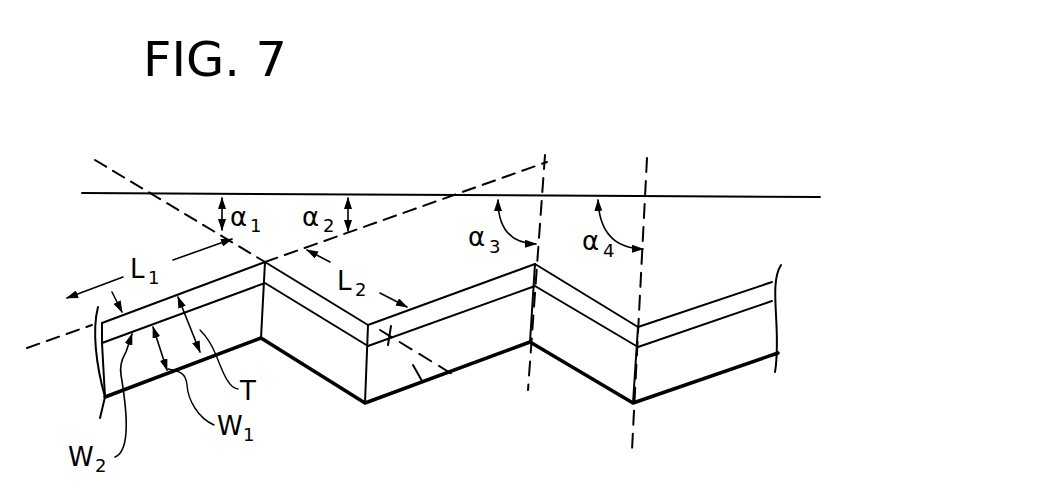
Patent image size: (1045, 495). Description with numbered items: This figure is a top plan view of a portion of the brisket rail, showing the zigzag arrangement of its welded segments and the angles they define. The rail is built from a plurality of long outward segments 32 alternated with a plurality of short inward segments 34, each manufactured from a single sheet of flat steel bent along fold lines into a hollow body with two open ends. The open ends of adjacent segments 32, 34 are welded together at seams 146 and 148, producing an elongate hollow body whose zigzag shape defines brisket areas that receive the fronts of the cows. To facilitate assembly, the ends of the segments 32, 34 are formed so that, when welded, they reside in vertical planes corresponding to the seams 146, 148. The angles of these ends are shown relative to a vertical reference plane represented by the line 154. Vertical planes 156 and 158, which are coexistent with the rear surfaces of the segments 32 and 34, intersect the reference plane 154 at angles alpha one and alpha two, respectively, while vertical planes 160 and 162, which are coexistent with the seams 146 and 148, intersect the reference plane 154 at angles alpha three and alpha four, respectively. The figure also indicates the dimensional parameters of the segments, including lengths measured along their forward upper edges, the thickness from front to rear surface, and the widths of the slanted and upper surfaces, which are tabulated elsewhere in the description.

The long outward segment 32 is at (138, 372).
The short inward segment 34 is at (312, 353).
The seam 146 is at (262, 320).
The seam 148 is at (367, 374).
The reference plane 154 is at (272, 194).
The vertical plane 156 is at (493, 181).
The vertical plane 158 is at (107, 167).
The vertical plane 160 is at (547, 165).
The vertical plane 162 is at (655, 162).